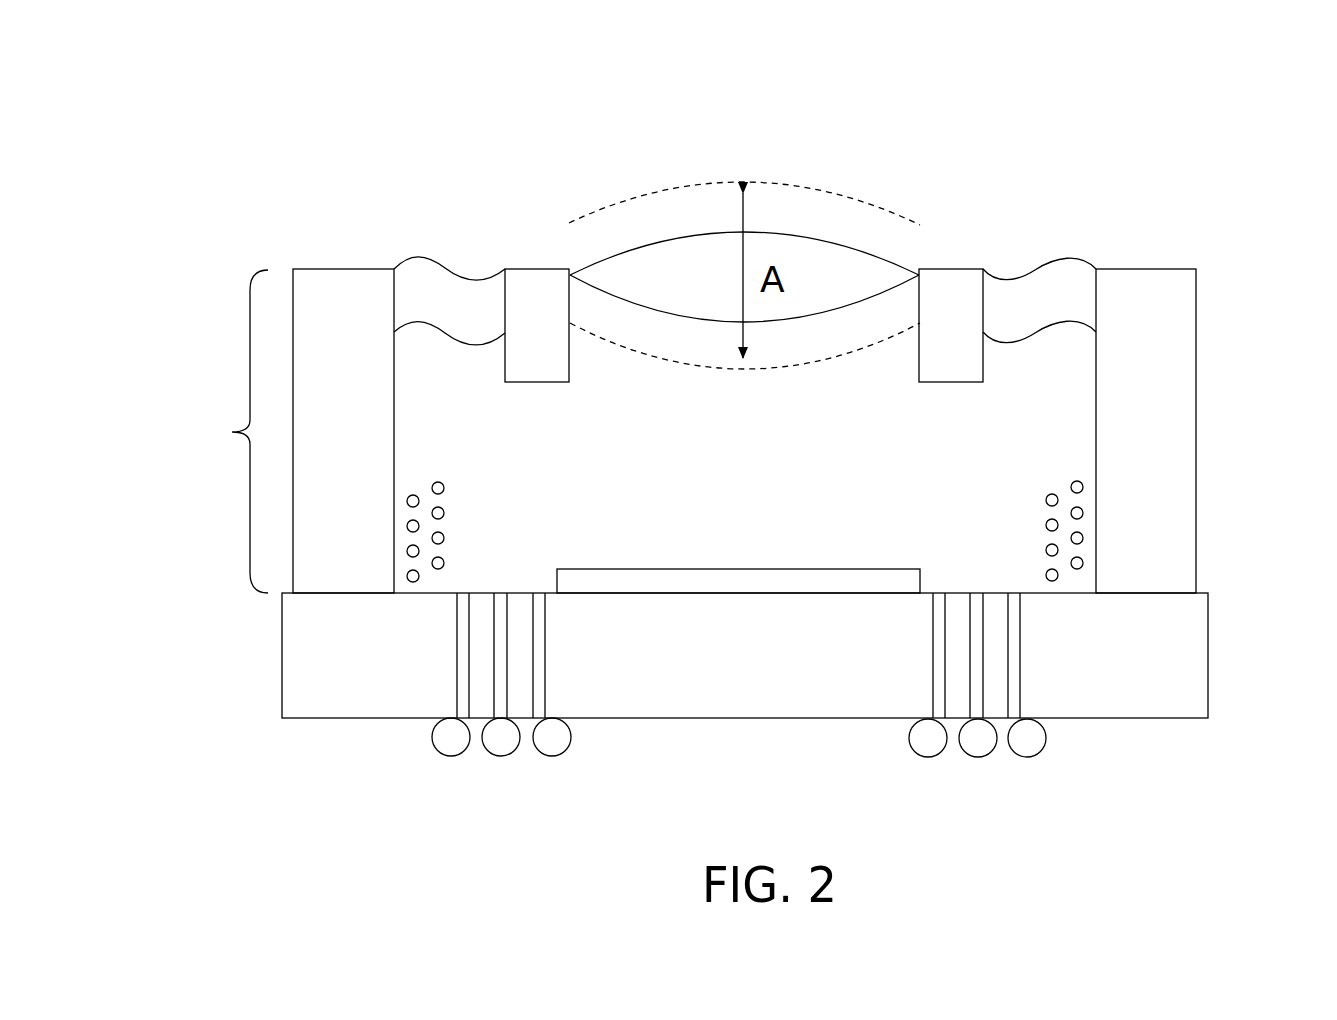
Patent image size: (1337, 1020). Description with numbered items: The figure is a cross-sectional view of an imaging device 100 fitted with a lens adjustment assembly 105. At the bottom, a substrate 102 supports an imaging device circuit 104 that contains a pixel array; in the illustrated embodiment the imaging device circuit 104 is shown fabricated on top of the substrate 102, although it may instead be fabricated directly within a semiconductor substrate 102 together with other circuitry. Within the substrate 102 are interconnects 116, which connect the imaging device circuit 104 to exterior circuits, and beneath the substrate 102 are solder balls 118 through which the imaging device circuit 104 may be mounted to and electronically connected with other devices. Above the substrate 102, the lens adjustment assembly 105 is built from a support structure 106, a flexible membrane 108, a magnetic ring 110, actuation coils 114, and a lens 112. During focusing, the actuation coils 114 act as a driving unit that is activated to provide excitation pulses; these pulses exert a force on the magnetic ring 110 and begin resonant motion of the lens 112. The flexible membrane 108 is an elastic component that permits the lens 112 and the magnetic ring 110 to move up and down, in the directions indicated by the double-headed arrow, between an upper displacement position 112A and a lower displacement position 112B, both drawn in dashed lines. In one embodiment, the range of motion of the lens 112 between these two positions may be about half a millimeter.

The imaging device 100 is at (1173, 102).
The substrate 102 is at (1208, 612).
The imaging device circuit 104 is at (870, 568).
The lens adjustment assembly 105 is at (215, 431).
The support structure 106 is at (1197, 385).
The flexible membrane 108 is at (1070, 258).
The magnetic ring 110 is at (932, 269).
The lens 112 is at (605, 257).
The upper displacement position 112A is at (693, 178).
The lower displacement position 112B is at (718, 369).
The actuation coils 114 is at (1060, 480).
The interconnects 116 is at (1022, 663).
The solder balls 118 is at (1039, 757).